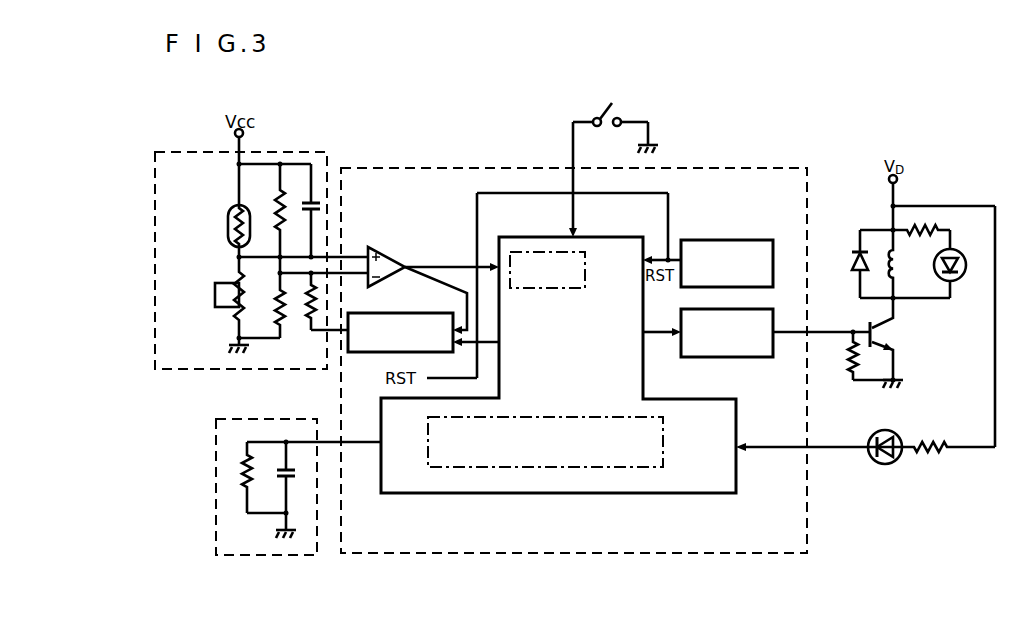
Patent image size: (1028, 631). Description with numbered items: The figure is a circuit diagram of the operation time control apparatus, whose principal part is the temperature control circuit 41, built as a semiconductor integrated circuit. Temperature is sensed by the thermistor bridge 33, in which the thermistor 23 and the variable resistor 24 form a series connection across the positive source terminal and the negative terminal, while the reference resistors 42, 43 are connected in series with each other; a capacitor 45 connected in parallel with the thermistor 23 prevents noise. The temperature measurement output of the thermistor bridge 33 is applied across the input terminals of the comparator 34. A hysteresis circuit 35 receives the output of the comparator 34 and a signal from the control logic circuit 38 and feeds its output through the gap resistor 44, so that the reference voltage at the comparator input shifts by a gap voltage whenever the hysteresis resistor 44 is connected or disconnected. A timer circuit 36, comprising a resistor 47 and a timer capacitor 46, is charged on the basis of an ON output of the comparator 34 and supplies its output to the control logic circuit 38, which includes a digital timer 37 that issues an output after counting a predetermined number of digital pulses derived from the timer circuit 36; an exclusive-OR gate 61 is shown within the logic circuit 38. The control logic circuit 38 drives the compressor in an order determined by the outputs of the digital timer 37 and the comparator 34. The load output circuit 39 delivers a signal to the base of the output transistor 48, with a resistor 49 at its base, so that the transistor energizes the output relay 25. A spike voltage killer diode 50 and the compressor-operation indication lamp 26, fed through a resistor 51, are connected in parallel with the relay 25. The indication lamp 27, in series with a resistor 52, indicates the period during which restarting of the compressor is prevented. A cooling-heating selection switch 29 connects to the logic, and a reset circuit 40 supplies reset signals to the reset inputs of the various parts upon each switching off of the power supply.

The thermistor 23 is at (228, 222).
The resistor 24 is at (215, 300).
The output relay 25 is at (900, 270).
The compressor-operation indication lamp (LED) 26 is at (962, 256).
The indication lamp (LED) 27 is at (888, 465).
The cooling-heating selection switch 29 is at (621, 116).
The thermistor bridge 33 is at (170, 152).
The comparator 34 is at (393, 257).
The hysteresis circuit 35 is at (373, 343).
The timer circuit 36 is at (237, 419).
The digital timer 37 is at (575, 417).
The control logic circuit 38 is at (527, 236).
The load output circuit 39 is at (772, 322).
The reset circuit 40 is at (771, 253).
The temperature control circuit 41 is at (380, 167).
The reference resistor 42 is at (275, 210).
The reference resistor 43 is at (277, 300).
The gap resistor 44 is at (306, 316).
The capacitor 45 is at (308, 212).
The timer capacitor 46 is at (291, 480).
The resistor 47 is at (240, 470).
The output transistor 48 is at (890, 336).
The resistor 49 is at (847, 364).
The spike voltage killer diode 50 is at (851, 261).
The resistor 51 is at (931, 226).
The resistor 52 is at (937, 458).
The exclusive OR gate 61 is at (550, 290).